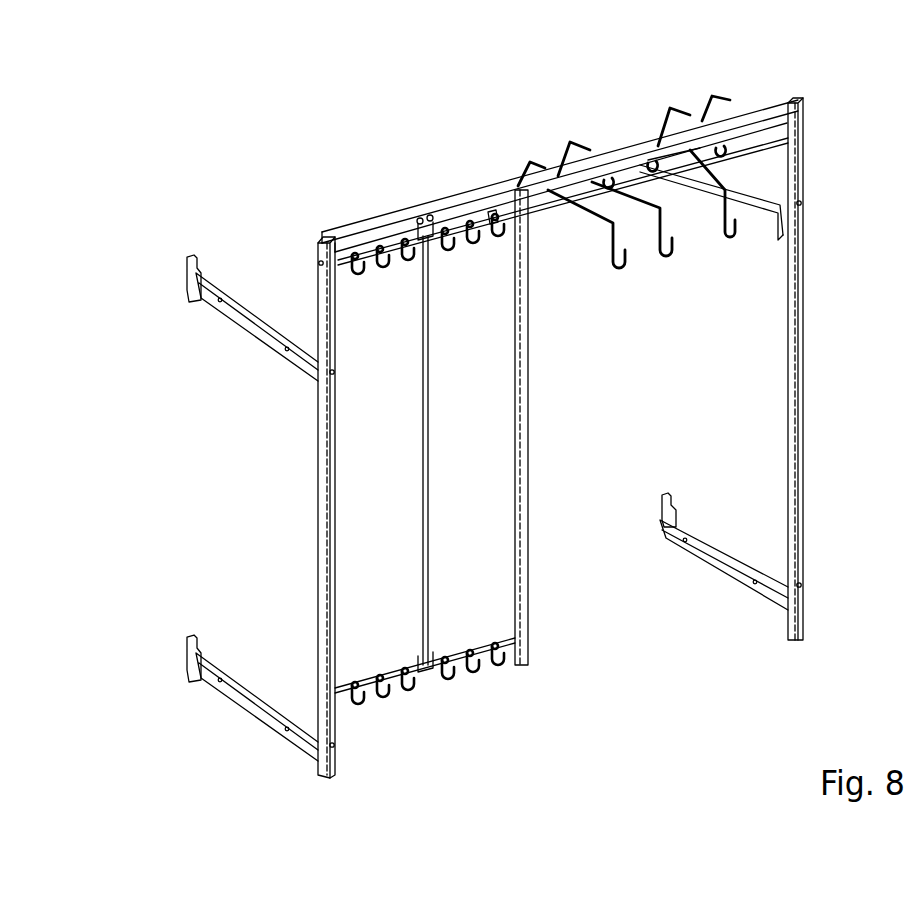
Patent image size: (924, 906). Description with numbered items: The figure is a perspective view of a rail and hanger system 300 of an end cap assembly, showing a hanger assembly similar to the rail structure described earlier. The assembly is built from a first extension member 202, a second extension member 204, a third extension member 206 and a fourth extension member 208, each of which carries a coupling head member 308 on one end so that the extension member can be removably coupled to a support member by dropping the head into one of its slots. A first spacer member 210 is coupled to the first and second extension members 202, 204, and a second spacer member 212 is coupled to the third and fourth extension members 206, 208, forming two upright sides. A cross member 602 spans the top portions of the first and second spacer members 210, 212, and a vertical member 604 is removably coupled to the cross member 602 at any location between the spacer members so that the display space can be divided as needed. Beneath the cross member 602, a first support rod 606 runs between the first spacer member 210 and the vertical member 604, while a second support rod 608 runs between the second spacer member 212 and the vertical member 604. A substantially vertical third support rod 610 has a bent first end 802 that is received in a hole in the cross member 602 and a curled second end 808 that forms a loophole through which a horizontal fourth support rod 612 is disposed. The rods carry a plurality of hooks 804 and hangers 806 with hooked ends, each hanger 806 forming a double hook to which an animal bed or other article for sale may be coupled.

The storage rack assembly 300 is at (196, 135).
The first extension member 202 is at (250, 327).
The second extension member 204 is at (257, 707).
The third extension member 206 is at (745, 212).
The fourth extension member 208 is at (713, 567).
The first spacer member 210 is at (325, 482).
The second spacer member 212 is at (802, 385).
The coupling head member 308 is at (180, 263).
The cross member 602 is at (607, 157).
The vertical member 604 is at (527, 383).
The first support rod 606 is at (493, 213).
The second support rod 608 is at (767, 140).
The third support rod 610 is at (427, 405).
The fourth support rod 612 is at (387, 690).
The first end 802 is at (420, 233).
The hooks 804 is at (467, 260).
The hangers 806 is at (667, 262).
The second end 808 is at (432, 667).